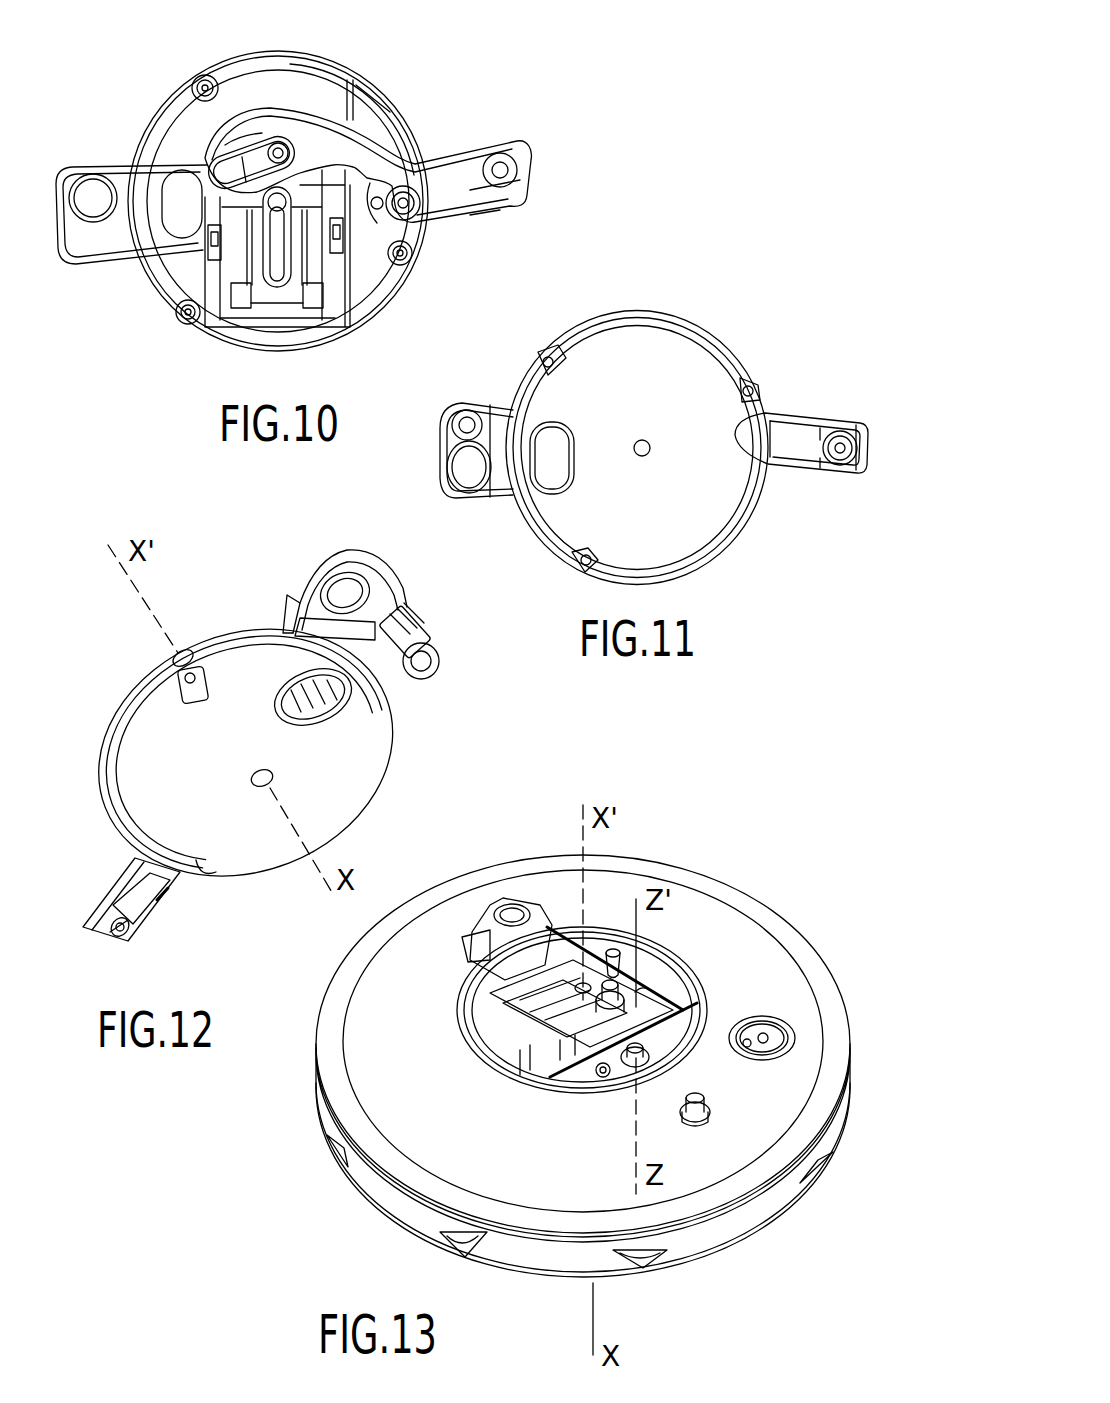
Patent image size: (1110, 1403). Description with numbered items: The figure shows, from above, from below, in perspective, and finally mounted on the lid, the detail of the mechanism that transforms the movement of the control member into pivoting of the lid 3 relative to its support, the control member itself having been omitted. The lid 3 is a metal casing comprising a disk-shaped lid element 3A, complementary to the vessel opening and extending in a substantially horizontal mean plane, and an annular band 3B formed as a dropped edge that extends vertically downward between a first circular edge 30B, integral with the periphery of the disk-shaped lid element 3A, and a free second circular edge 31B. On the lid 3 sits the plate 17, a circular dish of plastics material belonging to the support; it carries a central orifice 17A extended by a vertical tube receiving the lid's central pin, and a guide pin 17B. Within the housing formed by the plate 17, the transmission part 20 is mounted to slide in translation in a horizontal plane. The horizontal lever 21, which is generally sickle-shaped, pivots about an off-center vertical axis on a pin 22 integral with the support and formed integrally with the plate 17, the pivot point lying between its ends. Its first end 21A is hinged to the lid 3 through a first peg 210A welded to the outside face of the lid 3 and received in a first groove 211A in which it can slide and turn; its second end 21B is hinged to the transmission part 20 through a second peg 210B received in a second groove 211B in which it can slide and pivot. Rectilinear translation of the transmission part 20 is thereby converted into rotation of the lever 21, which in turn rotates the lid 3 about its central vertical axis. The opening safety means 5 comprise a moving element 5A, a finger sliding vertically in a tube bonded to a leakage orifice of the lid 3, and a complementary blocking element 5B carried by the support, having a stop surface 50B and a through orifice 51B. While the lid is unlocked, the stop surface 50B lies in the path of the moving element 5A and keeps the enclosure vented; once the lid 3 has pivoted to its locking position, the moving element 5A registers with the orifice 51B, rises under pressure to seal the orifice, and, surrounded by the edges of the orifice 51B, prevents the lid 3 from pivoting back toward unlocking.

In FIG. 13, the lid 3 is at (608, 1093).
In FIG. 13, the disk-shaped lid element 3A is at (373, 1008).
In FIG. 13, the annular band 3B is at (765, 1200).
In FIG. 13, the first circular edge 30B is at (833, 977).
In FIG. 13, the free second circular edge 31B is at (556, 1282).
In FIG. 10, the opening safety means 5 is at (114, 223).
In FIG. 11, the opening safety means 5 is at (468, 457).
In FIG. 12, the opening safety means 5 is at (365, 582).
In FIG. 13, the opening safety means 5 is at (466, 906).
In FIG. 11, the moving element 5A is at (467, 420).
In FIG. 12, the moving element 5A is at (432, 648).
In FIG. 13, the moving element 5A is at (468, 922).
In FIG. 10, the complementary blocking element 5B is at (104, 252).
In FIG. 11, the complementary blocking element 5B is at (497, 494).
In FIG. 12, the complementary blocking element 5B is at (336, 556).
In FIG. 12, the stop surface 50B is at (378, 600).
In FIG. 10, the through orifice 51B is at (92, 190).
In FIG. 11, the through orifice 51B is at (470, 468).
In FIG. 12, the through orifice 51B is at (342, 596).
In FIG. 10, the plate 17 is at (360, 106).
In FIG. 11, the plate 17 is at (688, 526).
In FIG. 12, the plate 17 is at (167, 795).
In FIG. 13, the plate 17 is at (665, 960).
In FIG. 10, the central orifice 17A is at (277, 212).
In FIG. 11, the central orifice 17A is at (642, 438).
In FIG. 12, the central orifice 17A is at (273, 776).
In FIG. 13, the guide pin 17B is at (608, 948).
In FIG. 10, the transmission part 20 is at (267, 281).
In FIG. 13, the transmission part 20 is at (640, 1000).
In FIG. 10, the horizontal lever 21 is at (354, 151).
In FIG. 11, the horizontal lever 21 is at (818, 446).
In FIG. 12, the horizontal lever 21 is at (132, 928).
In FIG. 10, the first end 21A is at (500, 152).
In FIG. 11, the first end 21A is at (843, 468).
In FIG. 12, the first end 21A is at (88, 936).
In FIG. 10, the second end 21B is at (250, 130).
In FIG. 10, the pin 22 is at (406, 184).
In FIG. 13, the pin 22 is at (660, 1062).
In FIG. 10, the first peg 210A is at (492, 200).
In FIG. 11, the first peg 210A is at (842, 431).
In FIG. 12, the first peg 210A is at (123, 938).
In FIG. 13, the first peg 210A is at (700, 1122).
In FIG. 10, the second peg 210B is at (270, 140).
In FIG. 13, the second peg 210B is at (645, 988).
In FIG. 10, the first groove 211A is at (478, 224).
In FIG. 11, the first groove 211A is at (824, 468).
In FIG. 12, the first groove 211A is at (137, 917).
In FIG. 10, the second groove 211B is at (205, 74).